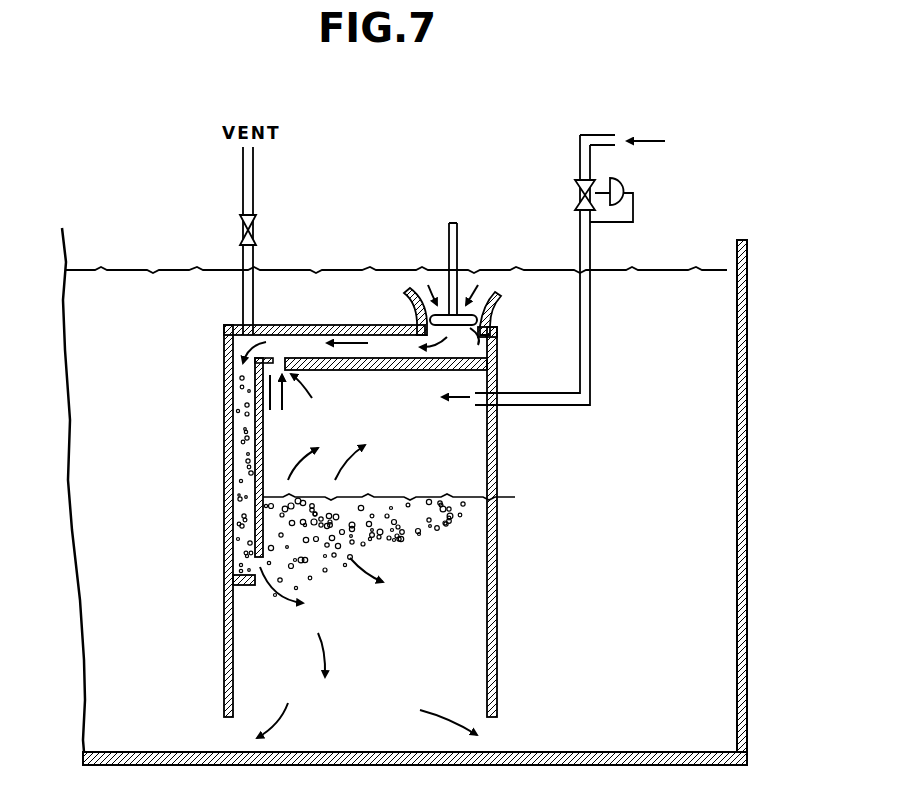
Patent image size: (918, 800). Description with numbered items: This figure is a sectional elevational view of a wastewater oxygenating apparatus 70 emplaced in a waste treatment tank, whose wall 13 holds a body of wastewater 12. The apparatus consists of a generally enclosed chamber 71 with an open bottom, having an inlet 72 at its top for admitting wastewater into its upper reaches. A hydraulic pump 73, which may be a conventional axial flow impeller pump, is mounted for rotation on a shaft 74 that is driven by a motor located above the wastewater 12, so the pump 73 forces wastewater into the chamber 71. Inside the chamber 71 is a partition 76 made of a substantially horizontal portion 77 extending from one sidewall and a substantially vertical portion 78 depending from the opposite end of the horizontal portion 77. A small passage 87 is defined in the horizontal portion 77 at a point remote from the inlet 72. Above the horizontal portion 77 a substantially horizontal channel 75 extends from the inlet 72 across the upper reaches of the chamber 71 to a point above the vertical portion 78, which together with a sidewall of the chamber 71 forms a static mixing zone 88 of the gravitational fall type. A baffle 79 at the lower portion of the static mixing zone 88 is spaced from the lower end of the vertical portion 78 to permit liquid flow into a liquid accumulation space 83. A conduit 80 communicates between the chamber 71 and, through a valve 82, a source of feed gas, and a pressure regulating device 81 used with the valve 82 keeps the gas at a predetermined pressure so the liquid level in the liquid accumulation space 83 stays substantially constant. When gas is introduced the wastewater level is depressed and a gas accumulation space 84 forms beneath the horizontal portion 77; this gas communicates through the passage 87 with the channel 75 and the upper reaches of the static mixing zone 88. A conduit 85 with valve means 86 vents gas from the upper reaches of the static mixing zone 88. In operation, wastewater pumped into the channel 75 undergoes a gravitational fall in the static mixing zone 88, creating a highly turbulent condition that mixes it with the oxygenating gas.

The body of wastewater 12 is at (692, 319).
The tank wall 13 is at (737, 436).
The oxygenating apparatus 70 is at (334, 480).
The chamber 71 is at (497, 522).
The inlet 72 is at (494, 307).
The hydraulic pump 73 is at (498, 340).
The shaft 74 is at (458, 248).
The horizontal channel 75 is at (372, 340).
The partition 76 is at (351, 378).
The horizontal portion 77 is at (368, 372).
The vertical portion 78 is at (265, 428).
The baffle 79 is at (250, 584).
The conduit 80 is at (590, 362).
The pressure regulating device 81 is at (625, 186).
The valve 82 is at (574, 195).
The liquid accumulation space 83 is at (442, 651).
The gas accumulation space 84 is at (448, 486).
The vent conduit 85 is at (257, 276).
The valve means 86 is at (257, 228).
The passage 87 is at (283, 352).
The static mixing zone 88 is at (256, 490).